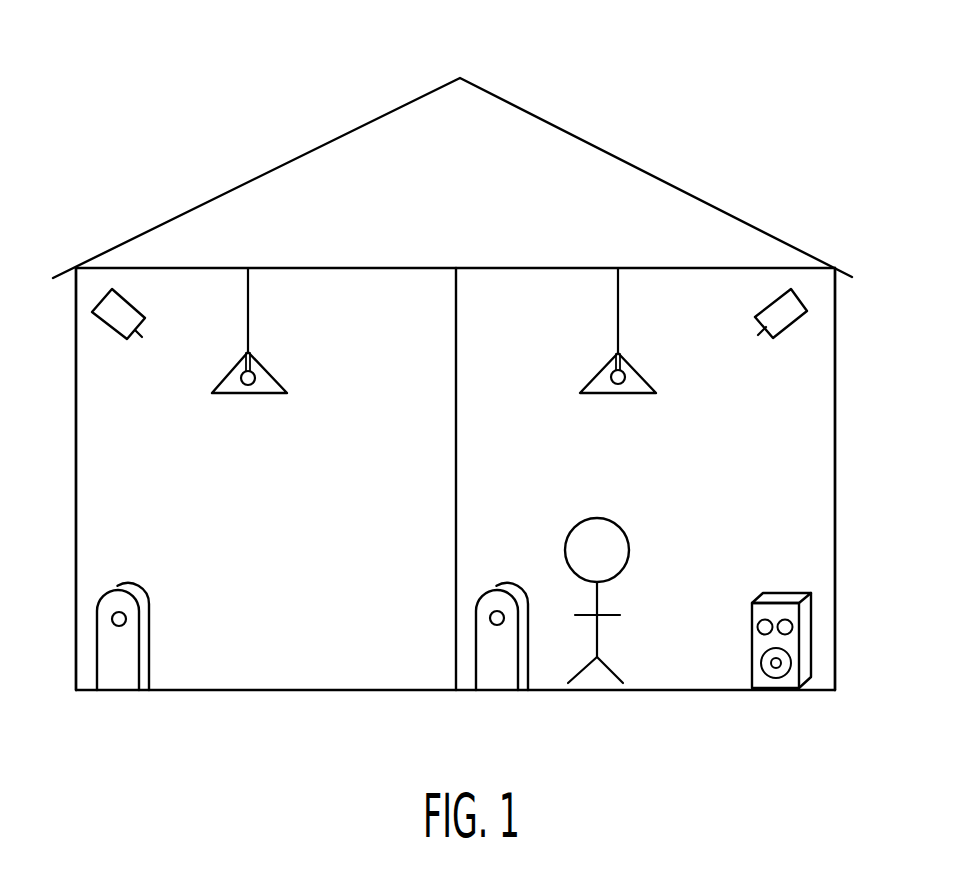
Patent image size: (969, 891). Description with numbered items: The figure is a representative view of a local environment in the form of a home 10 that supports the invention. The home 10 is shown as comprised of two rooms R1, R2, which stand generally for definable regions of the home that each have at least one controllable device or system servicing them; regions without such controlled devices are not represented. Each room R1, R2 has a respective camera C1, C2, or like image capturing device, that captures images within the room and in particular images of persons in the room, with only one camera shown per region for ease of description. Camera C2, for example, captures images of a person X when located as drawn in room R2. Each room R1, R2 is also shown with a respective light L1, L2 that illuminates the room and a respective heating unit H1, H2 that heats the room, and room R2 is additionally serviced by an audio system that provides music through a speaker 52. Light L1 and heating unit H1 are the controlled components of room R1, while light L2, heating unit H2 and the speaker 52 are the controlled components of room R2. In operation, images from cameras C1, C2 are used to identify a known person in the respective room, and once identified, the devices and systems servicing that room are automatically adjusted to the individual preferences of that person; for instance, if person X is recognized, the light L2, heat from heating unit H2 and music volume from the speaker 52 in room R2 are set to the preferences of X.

The home 10 is at (136, 128).
The room R1 is at (90, 473).
The room R2 is at (828, 473).
The camera C1 is at (122, 325).
The camera C2 is at (788, 325).
The light L1 is at (229, 373).
The light L2 is at (595, 372).
The heating unit H1 is at (149, 600).
The heating unit H2 is at (493, 587).
The person X is at (572, 533).
The loudspeaker / audio output device 52 is at (782, 592).